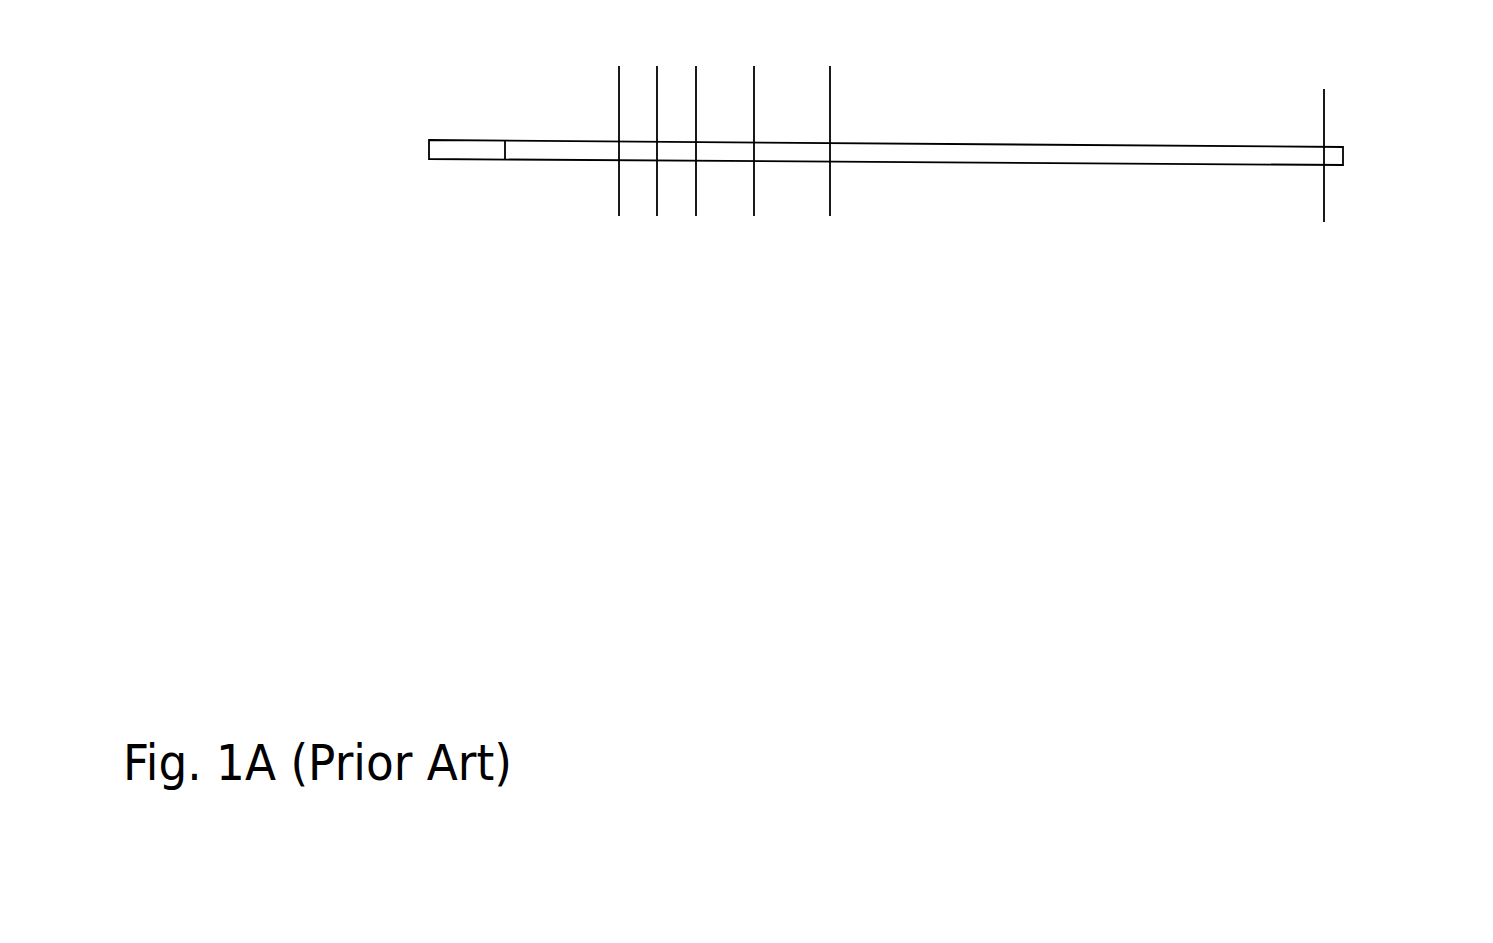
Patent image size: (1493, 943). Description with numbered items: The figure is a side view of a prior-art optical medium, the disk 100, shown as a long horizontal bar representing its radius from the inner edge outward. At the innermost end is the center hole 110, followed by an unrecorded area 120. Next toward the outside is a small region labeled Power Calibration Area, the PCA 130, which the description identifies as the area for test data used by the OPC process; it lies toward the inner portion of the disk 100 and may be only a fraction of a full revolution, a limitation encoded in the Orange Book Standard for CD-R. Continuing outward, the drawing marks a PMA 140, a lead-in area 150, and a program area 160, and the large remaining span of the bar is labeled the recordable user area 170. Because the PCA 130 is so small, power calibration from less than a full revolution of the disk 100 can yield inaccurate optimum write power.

The disk 100 is at (1365, 155).
The Center Hole 110 is at (430, 198).
The Unrecorded Area 120 is at (619, 102).
The Power Calibration Area (PCA) 130 is at (619, 203).
The PMA (Program Memory Area) 140 is at (657, 203).
The Lead-in Area 150 is at (696, 204).
The Program Area 160 is at (754, 204).
The Recordable User Area 170 is at (830, 204).